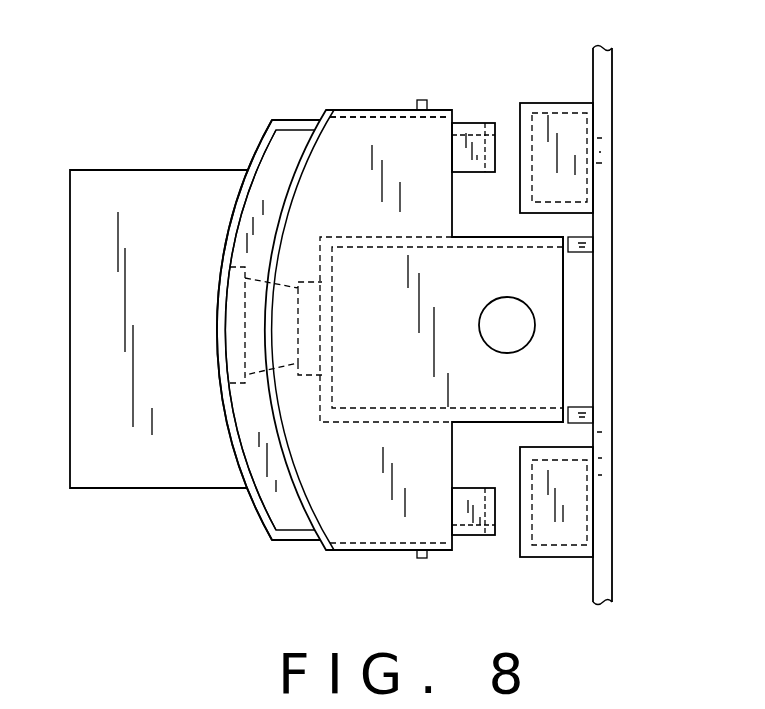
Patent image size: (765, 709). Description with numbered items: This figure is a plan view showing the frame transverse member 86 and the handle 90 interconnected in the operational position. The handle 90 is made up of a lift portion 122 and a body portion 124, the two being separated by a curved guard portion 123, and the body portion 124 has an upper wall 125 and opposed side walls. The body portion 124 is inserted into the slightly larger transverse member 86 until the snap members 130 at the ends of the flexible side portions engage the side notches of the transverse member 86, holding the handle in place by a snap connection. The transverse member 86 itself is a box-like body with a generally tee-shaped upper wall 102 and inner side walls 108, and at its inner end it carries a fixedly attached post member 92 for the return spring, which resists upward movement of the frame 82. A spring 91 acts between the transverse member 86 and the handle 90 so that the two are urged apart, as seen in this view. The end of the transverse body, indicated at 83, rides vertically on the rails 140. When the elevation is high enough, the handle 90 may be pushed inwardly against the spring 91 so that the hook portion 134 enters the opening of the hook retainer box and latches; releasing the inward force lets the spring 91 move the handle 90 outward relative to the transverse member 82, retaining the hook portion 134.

The frame 82 is at (383, 88).
The end of the transverse body 83 is at (563, 343).
The upper transverse member 86 is at (328, 108).
The handle 90 is at (219, 130).
The spring 91 is at (283, 368).
The post member 92 is at (478, 324).
The upper wall 102 is at (322, 212).
The inner side walls 108 is at (402, 237).
The lift portion 122 is at (152, 339).
The curved guard portion 123 is at (223, 408).
The body portion 124 is at (350, 108).
The upper wall 125 is at (252, 216).
The snap member 130 is at (428, 103).
The hook portion 134 is at (497, 147).
The rails 140 is at (580, 253).